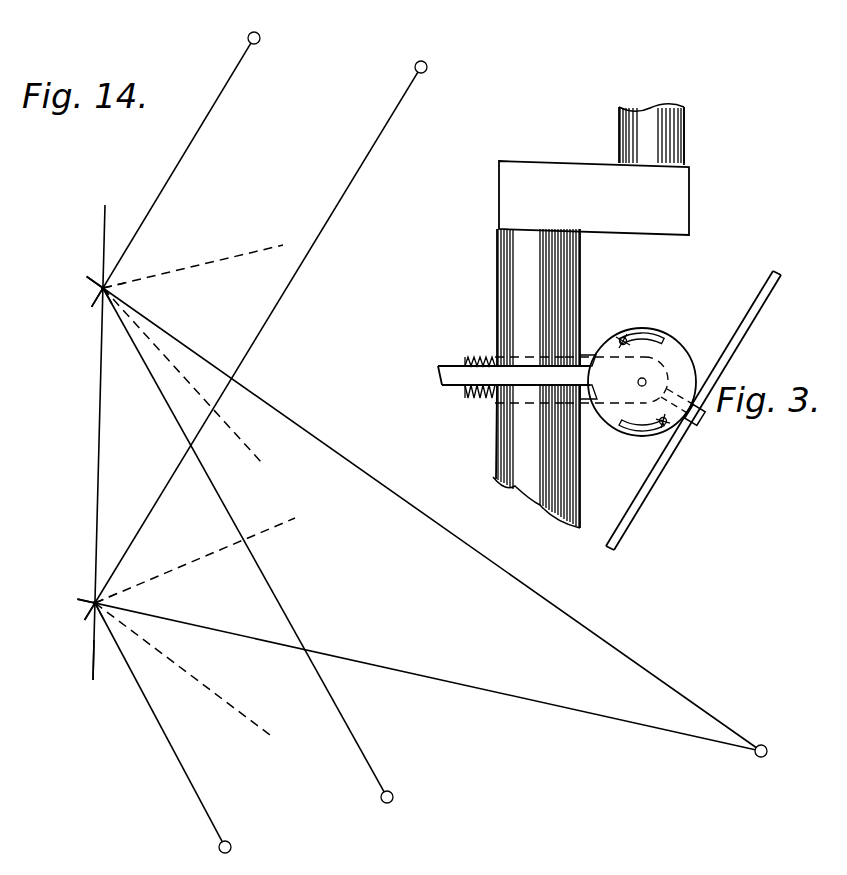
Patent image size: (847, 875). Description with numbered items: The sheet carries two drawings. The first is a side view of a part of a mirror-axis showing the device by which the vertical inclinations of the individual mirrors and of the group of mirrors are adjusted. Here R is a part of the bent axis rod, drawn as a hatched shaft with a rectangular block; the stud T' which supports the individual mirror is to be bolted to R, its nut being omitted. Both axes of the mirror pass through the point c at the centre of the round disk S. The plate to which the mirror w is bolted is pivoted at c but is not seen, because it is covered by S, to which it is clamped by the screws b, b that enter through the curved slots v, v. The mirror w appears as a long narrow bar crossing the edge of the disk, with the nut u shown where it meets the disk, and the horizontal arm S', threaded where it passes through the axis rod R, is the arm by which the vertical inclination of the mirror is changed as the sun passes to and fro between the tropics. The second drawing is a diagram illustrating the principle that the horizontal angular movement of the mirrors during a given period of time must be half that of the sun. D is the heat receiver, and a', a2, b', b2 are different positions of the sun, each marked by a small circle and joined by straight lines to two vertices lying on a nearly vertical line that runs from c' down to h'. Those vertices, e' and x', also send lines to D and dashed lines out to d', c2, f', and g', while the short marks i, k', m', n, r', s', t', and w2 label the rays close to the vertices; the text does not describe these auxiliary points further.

In FIG. 14, the position of the sun a' is at (188, 166).
In FIG. 14, the position of the sun a2 is at (269, 337).
In FIG. 14, the position of the sun b' is at (175, 729).
In FIG. 14, the position of the sun b2 is at (261, 548).
In FIG. 14, the vertical reference line c' is at (107, 430).
In FIG. 14, the point c² c2 is at (194, 381).
In FIG. 14, the point d' is at (200, 261).
In FIG. 14, the pivot point e' is at (92, 288).
In FIG. 14, the point f' is at (201, 555).
In FIG. 14, the point g' is at (189, 681).
In FIG. 14, the point h' is at (91, 674).
In FIG. 14, the point i is at (117, 274).
In FIG. 14, the point k' is at (84, 305).
In FIG. 14, the point m' is at (89, 272).
In FIG. 14, the point n is at (110, 308).
In FIG. 14, the point r' is at (82, 586).
In FIG. 14, the point s' is at (112, 587).
In FIG. 14, the point t' is at (77, 620).
In FIG. 14, the point w² w2 is at (107, 623).
In FIG. 14, the disk x' is at (86, 604).
In FIG. 14, the heat receiver D is at (422, 530).
In FIG. 3, the bent axis rod R is at (598, 316).
In FIG. 3, the disk S is at (630, 382).
In FIG. 3, the arm S' is at (514, 372).
In FIG. 3, the stud T' is at (590, 366).
In FIG. 3, the screws b is at (641, 383).
In FIG. 3, the slots v is at (648, 337).
In FIG. 3, the pivot point c is at (656, 365).
In FIG. 3, the nut u is at (697, 421).
In FIG. 3, the mirror w is at (746, 327).